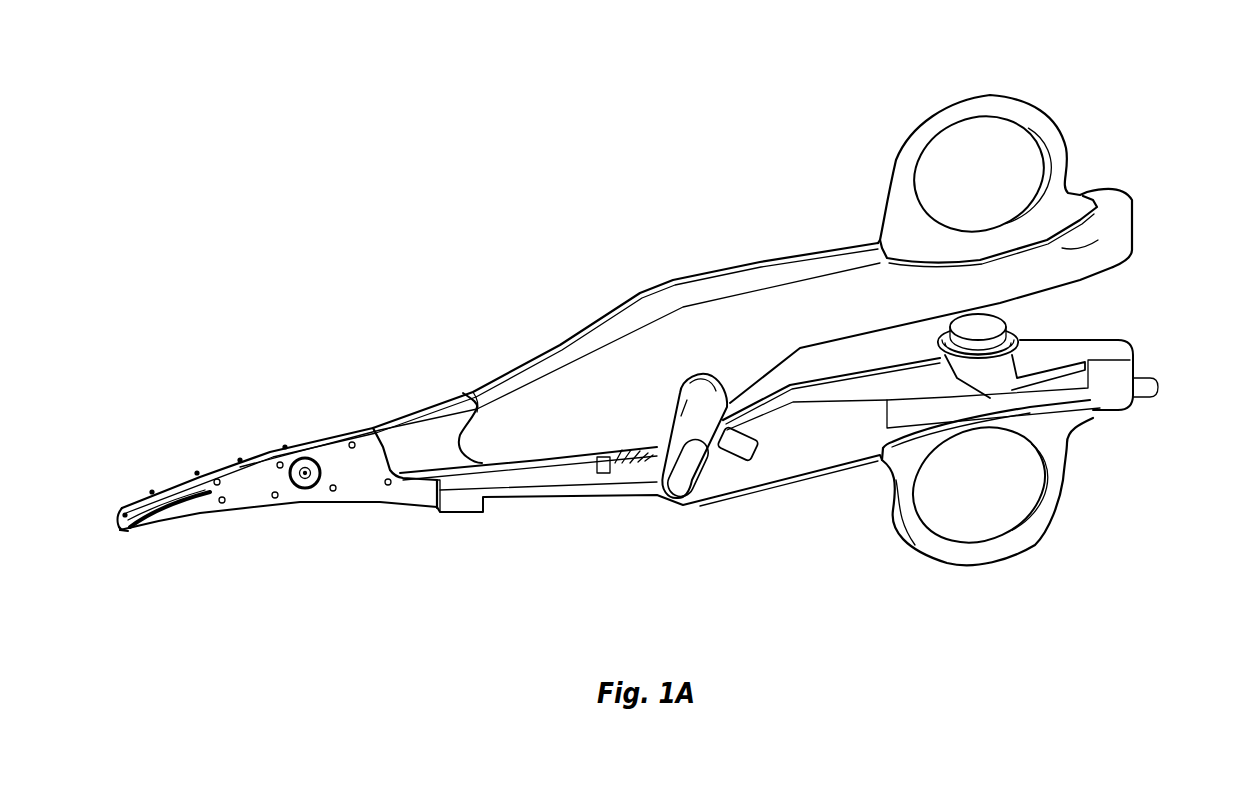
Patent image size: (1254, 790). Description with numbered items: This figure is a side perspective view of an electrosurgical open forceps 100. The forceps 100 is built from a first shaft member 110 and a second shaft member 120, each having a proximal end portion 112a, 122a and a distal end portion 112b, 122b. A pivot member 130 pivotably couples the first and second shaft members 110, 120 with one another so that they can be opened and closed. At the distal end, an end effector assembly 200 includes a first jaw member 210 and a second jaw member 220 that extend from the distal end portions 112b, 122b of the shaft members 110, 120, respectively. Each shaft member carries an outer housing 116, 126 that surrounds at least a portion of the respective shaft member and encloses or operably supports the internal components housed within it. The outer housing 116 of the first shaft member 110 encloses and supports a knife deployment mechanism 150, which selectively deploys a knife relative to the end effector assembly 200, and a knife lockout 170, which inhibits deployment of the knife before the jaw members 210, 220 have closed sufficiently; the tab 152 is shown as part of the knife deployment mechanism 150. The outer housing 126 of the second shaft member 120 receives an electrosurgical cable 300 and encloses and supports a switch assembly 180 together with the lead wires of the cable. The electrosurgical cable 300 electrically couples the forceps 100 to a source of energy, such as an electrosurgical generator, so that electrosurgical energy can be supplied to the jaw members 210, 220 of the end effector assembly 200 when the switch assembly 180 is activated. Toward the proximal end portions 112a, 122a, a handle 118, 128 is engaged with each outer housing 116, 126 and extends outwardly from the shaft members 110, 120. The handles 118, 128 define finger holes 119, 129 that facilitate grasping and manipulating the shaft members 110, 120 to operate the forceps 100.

The forceps 100 is at (549, 204).
The first shaft member 110 is at (740, 243).
The proximal end portion of first shaft member 112a is at (1062, 247).
The distal end portion of first shaft member 112b is at (385, 428).
The outer housing of first shaft member 116 is at (830, 283).
The handle of first shaft member 118 is at (986, 96).
The finger hole of first handle 119 is at (1029, 152).
The second shaft member 120 is at (806, 494).
The proximal end portion of second shaft member 122a is at (1118, 412).
The distal end portion of second shaft member 122b is at (460, 500).
The outer housing of second shaft member 126 is at (840, 455).
The handle of second shaft member 128 is at (1060, 480).
The finger hole of second handle 129 is at (1018, 507).
The pivot member 130 is at (303, 490).
The knife deployment mechanism 150 is at (708, 358).
The lever tab 152 is at (677, 500).
The knife lockout 170 is at (432, 430).
The switch assembly 180 is at (1021, 320).
The end effector assembly 200 is at (256, 433).
The first jaw member 210 is at (170, 510).
The second jaw member 220 is at (140, 502).
The electrosurgical cable 300 is at (1160, 385).